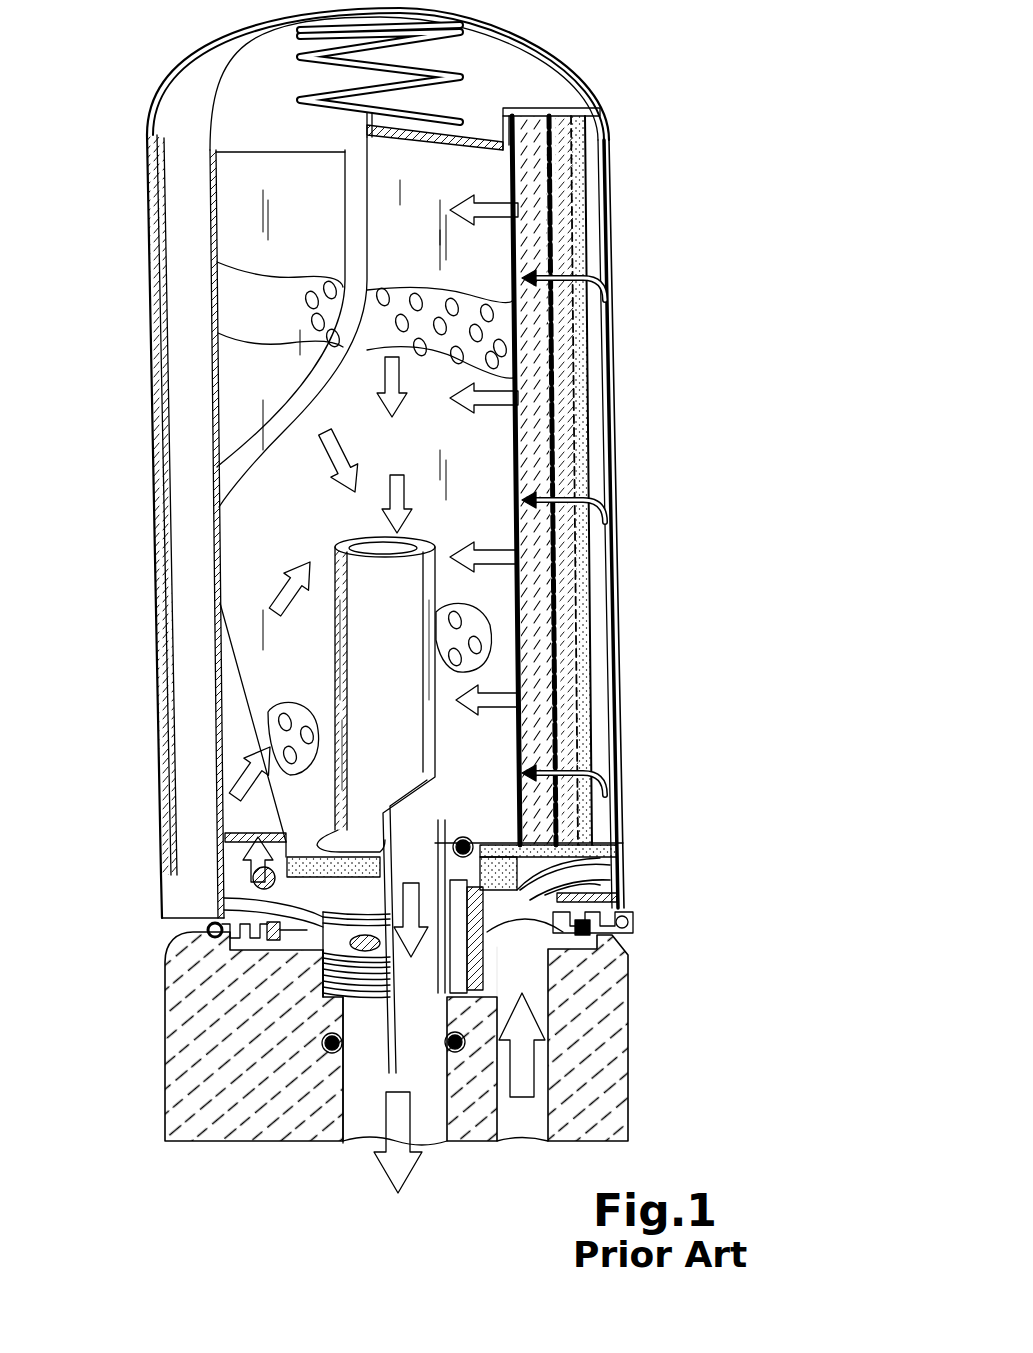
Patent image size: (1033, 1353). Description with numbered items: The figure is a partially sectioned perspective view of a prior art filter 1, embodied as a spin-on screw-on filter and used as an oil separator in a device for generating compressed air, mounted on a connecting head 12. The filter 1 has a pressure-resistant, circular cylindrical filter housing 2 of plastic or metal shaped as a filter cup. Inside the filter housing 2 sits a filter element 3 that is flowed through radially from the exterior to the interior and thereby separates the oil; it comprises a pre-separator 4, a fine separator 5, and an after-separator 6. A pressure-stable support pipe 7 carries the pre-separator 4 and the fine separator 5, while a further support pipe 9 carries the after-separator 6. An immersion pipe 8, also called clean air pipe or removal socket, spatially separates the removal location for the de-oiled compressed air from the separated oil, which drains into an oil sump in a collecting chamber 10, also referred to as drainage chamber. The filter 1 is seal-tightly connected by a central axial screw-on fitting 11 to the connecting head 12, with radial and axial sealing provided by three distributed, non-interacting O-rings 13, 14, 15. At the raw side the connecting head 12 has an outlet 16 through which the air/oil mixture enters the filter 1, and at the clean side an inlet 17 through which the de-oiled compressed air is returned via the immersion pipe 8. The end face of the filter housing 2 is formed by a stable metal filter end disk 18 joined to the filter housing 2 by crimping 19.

The filter 1 is at (640, 160).
The filter housing 2 is at (177, 400).
The filter element 3 is at (597, 240).
The pre-separator 4 is at (586, 449).
The fine separator 5 is at (574, 482).
The after-separator 6 is at (560, 412).
The support pipe 7 is at (560, 570).
The immersion pipe 8 is at (397, 637).
The further support pipe 9 is at (483, 333).
The collecting chamber 10 is at (500, 848).
The screw-on fitting 11 is at (314, 972).
The connecting head 12 is at (207, 1113).
The O-ring 13 is at (465, 838).
The O-ring 14 is at (582, 937).
The O-ring 15 is at (325, 1043).
The outlet 16 is at (523, 1117).
The inlet 17 is at (370, 1113).
The filter end disk 18 is at (623, 873).
The crimping 19 is at (637, 917).